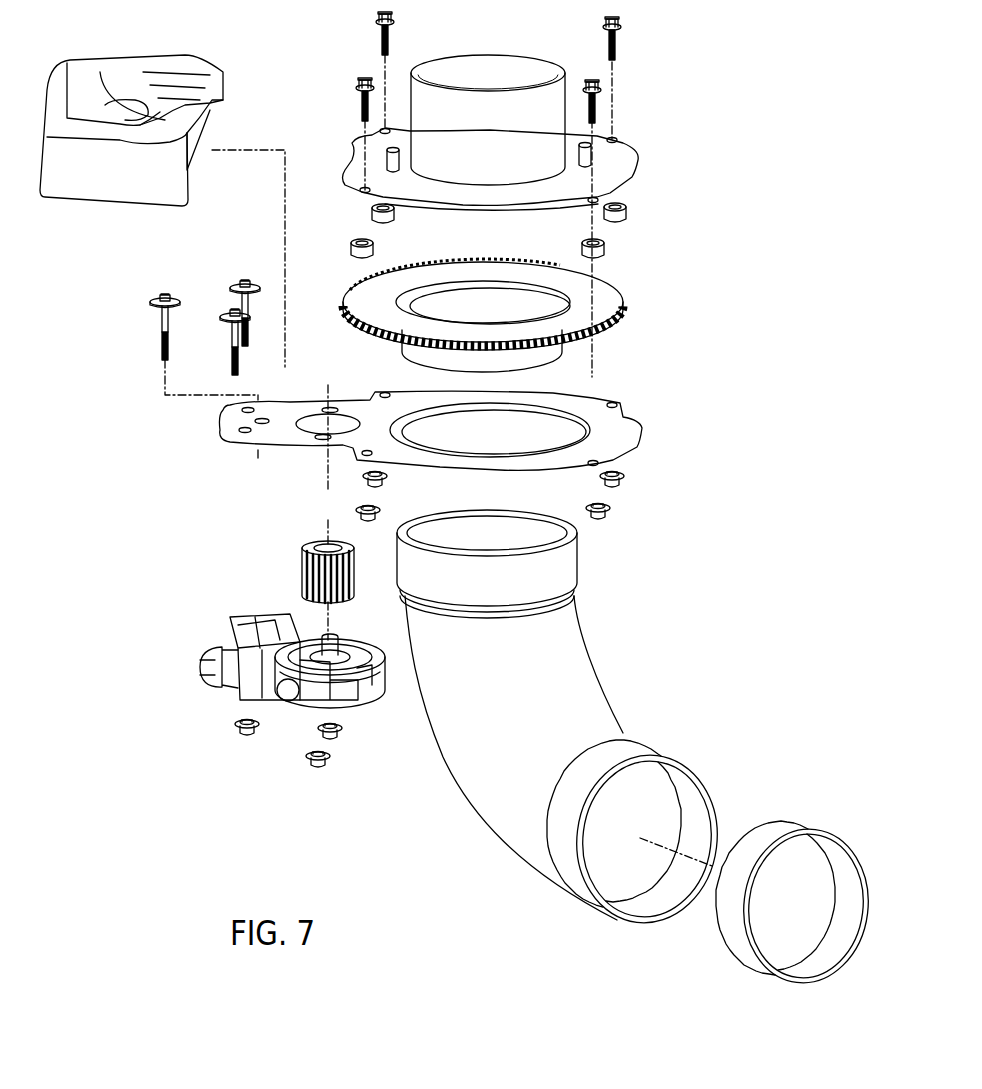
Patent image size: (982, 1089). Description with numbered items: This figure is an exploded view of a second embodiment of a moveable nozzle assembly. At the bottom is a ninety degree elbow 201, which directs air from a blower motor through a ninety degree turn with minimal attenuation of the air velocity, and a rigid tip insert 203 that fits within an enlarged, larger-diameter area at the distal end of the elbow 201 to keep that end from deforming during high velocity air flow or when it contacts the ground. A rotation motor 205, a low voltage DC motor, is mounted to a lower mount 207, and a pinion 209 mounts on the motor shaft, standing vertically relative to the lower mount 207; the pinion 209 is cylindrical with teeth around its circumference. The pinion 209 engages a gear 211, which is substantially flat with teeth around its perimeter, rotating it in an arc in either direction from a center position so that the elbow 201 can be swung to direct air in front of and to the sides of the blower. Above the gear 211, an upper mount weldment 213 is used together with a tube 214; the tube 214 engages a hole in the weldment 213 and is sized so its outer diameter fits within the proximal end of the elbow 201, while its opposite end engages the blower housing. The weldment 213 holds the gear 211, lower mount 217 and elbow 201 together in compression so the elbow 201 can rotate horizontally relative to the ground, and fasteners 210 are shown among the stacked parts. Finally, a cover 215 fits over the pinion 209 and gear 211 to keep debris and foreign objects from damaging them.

The 90 degree elbow 201 is at (572, 675).
The rigid tip insert 203 is at (780, 827).
The rotation motor 205 is at (252, 685).
The lower mount 207 is at (222, 420).
The pinion 209 is at (302, 566).
The bolts 210 is at (163, 318).
The gear 211 is at (613, 305).
The upper mount weldment 213 is at (628, 163).
The tube 214 is at (491, 62).
The cover 215 is at (126, 64).
The lower mount 217 is at (617, 52).